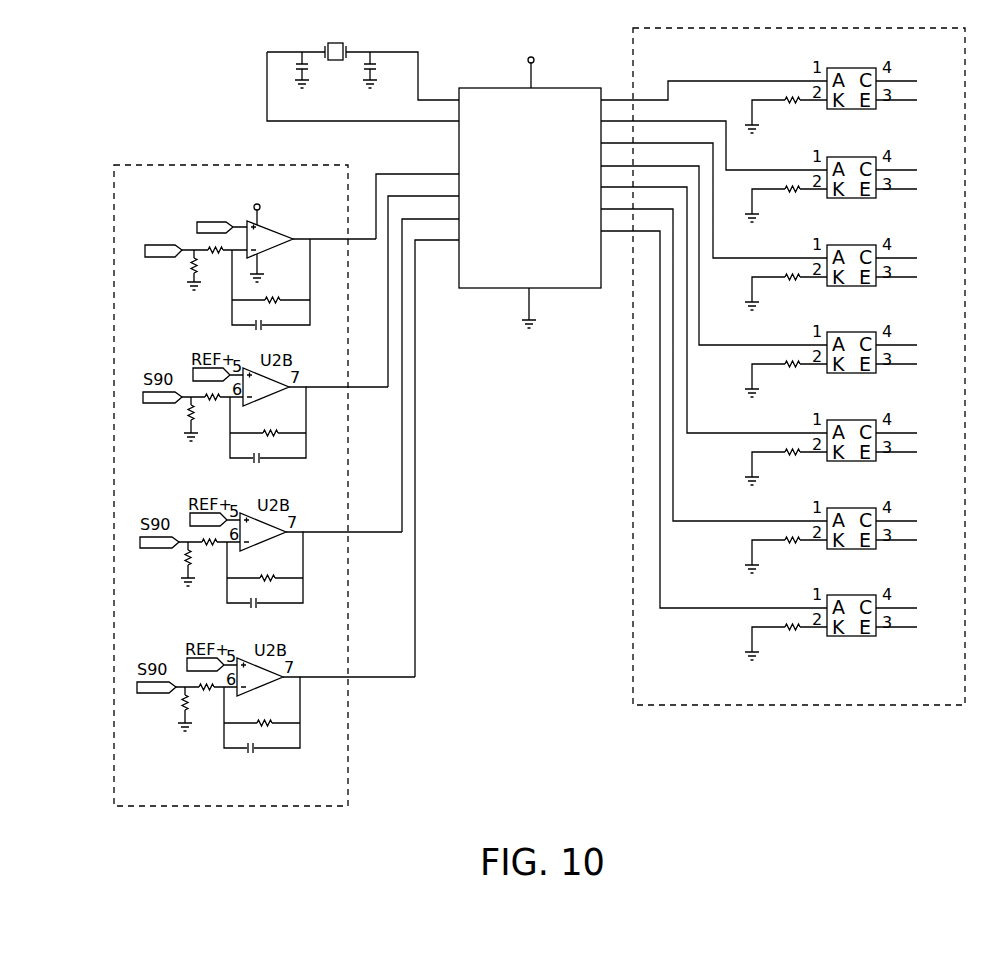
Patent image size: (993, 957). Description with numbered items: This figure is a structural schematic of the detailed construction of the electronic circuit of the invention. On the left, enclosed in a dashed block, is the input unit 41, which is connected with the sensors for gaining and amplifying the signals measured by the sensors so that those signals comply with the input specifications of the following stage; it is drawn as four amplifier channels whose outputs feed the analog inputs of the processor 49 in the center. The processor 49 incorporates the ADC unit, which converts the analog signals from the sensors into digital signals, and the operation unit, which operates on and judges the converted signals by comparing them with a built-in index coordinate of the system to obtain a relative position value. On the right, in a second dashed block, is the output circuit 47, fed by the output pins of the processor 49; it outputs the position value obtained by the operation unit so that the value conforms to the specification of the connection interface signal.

The input unit 41 is at (346, 758).
The output circuit 47 is at (813, 705).
The processor 49 is at (487, 288).